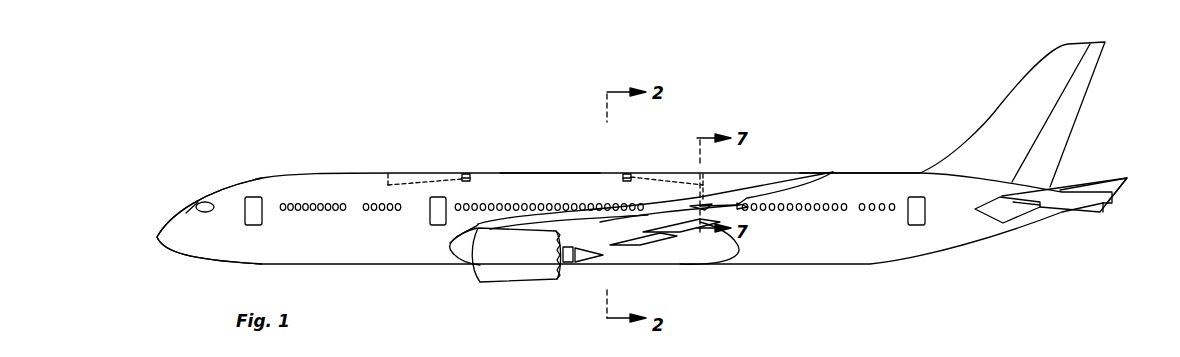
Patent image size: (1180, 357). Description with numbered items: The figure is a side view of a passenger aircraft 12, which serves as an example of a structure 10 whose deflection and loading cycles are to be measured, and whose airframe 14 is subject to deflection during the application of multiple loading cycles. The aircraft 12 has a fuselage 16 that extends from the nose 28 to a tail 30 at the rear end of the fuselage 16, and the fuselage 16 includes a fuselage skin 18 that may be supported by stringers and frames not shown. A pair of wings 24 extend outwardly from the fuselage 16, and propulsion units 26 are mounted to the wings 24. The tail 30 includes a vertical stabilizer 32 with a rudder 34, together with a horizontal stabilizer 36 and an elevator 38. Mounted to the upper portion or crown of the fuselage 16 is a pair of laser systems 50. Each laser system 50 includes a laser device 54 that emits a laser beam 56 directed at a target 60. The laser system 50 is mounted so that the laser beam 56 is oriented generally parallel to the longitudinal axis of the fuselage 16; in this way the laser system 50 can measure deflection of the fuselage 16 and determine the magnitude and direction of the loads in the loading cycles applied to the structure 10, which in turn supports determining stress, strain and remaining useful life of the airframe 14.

The structure 10 is at (251, 86).
The passenger aircraft 12 is at (329, 174).
The airframe 14 is at (551, 173).
The fuselage 16 is at (258, 176).
The fuselage skin 18 is at (862, 181).
The wings 24 is at (628, 218).
The propulsion units 26 is at (513, 272).
The nose 28 is at (165, 243).
The tail 30 is at (1100, 212).
The vertical stabilizer 32 is at (1032, 93).
The rudder 34 is at (1078, 94).
The horizontal stabilizer 36 is at (1040, 206).
The elevator 38 is at (1113, 191).
The laser system 50 is at (472, 177).
The laser device 54 is at (466, 176).
The laser beam 56 is at (430, 180).
The target 60 is at (390, 180).